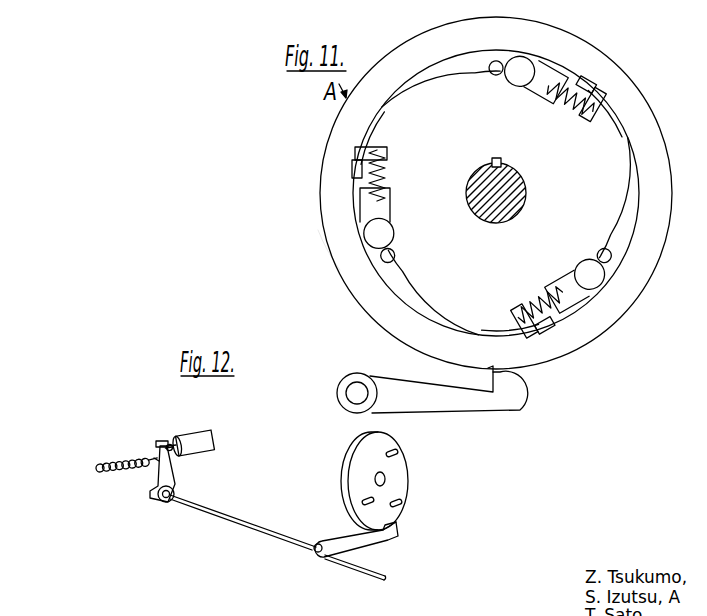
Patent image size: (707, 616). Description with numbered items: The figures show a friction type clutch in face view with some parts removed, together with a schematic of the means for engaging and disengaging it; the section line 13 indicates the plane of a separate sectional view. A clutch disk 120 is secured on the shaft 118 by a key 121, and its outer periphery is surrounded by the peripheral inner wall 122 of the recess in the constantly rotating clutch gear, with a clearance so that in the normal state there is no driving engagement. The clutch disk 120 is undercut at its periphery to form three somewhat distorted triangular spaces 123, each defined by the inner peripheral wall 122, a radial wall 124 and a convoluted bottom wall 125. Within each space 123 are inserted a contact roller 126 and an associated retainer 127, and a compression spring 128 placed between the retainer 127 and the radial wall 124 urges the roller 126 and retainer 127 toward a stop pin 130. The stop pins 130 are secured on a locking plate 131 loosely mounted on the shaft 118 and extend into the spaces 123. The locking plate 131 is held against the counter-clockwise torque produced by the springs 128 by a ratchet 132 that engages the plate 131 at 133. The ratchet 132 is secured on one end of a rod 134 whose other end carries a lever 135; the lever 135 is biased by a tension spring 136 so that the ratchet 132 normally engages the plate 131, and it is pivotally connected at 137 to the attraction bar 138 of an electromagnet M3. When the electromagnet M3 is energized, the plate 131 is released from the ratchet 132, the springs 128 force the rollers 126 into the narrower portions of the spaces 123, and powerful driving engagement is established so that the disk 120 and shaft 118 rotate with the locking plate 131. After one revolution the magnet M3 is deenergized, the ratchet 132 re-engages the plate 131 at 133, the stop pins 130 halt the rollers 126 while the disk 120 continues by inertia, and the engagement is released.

In FIG. 11, the section line XIII-XIII 13 is at (497, 0).
In FIG. 11, the shaft 118 is at (516, 181).
In FIG. 11, the clutch disk 120 is at (619, 164).
In FIG. 11, the key 121 is at (498, 161).
In FIG. 11, the peripheral inner wall 122 is at (657, 199).
In FIG. 11, the distorted triangular spaces 123 is at (362, 177).
In FIG. 11, the radial wall 124 is at (360, 167).
In FIG. 11, the convoluted bottom wall 125 is at (402, 273).
In FIG. 11, the contact rollers 126 is at (380, 233).
In FIG. 11, the retainers 127 is at (368, 210).
In FIG. 11, the compression springs 128 is at (382, 173).
In FIG. 11, the stop pins 130 is at (391, 255).
In FIG. 12, the stop pins 130 is at (365, 500).
In FIG. 11, the locking plate 131 is at (341, 263).
In FIG. 12, the locking plate 131 is at (355, 443).
In FIG. 11, the ratchet 132 is at (404, 387).
In FIG. 12, the ratchet 132 is at (367, 546).
In FIG. 11, the engagement point 133 is at (493, 370).
In FIG. 12, the engagement point 133 is at (397, 529).
In FIG. 11, the rod 134 is at (343, 393).
In FIG. 12, the rod 134 is at (270, 524).
In FIG. 12, the lever 135 is at (171, 473).
In FIG. 12, the tension spring 136 is at (127, 474).
In FIG. 12, the pivotal connection 137 is at (161, 445).
In FIG. 12, the attraction bar 138 is at (171, 446).
In FIG. 12, the electromagnet M3 is at (223, 428).